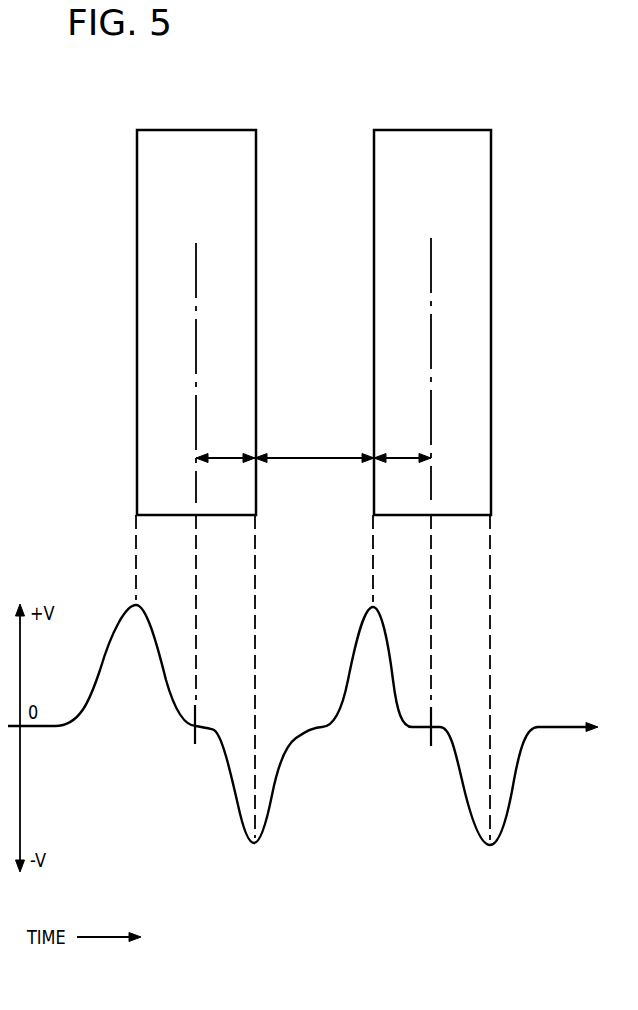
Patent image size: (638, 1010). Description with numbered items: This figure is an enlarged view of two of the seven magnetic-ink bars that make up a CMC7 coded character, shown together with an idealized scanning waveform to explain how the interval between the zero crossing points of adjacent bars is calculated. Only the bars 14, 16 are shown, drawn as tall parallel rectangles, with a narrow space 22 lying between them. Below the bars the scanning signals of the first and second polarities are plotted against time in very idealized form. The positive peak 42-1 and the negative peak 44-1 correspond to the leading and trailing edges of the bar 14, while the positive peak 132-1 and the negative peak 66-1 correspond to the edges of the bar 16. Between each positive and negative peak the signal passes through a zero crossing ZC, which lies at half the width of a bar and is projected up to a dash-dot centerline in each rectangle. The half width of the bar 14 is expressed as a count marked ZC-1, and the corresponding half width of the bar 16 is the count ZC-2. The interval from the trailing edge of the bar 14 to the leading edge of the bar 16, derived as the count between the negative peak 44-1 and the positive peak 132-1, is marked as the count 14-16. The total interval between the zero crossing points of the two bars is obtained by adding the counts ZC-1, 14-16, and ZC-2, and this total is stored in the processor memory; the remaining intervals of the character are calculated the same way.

The bar 14 is at (193, 147).
The bar 16 is at (463, 140).
The narrow space 22 is at (316, 153).
The zero crossing count ZC-1 is at (222, 457).
The zero crossing count ZC-2 is at (403, 457).
The count 14-16 is at (296, 461).
The positive peak 42-1 is at (135, 605).
The negative peak 44-1 is at (253, 843).
The positive peak 132-1 is at (372, 606).
The negative peak 66-1 is at (490, 846).
The zero crossing ZC is at (195, 712).